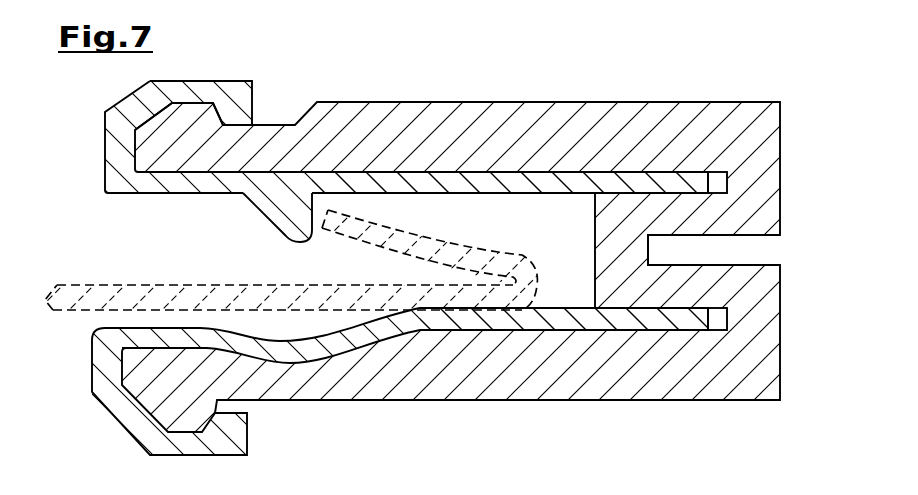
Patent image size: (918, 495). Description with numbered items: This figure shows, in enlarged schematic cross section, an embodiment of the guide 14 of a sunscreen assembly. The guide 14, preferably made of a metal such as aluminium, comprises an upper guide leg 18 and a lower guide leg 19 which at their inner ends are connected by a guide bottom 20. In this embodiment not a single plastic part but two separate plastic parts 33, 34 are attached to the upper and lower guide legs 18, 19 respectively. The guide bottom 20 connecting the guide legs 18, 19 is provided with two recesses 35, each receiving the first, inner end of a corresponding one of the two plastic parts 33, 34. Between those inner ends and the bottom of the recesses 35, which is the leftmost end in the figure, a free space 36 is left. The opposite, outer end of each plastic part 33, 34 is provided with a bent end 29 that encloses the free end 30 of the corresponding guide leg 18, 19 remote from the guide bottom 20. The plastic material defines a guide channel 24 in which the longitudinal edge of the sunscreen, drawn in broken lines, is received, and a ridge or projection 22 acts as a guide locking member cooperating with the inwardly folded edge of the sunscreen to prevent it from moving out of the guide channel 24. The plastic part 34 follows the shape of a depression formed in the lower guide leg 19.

The guide 14 is at (557, 97).
The upper guide leg 18 is at (427, 118).
The lower guide leg 19 is at (421, 399).
The guide bottom 20 is at (767, 283).
The projection 22 is at (297, 236).
The guide channel 24 is at (459, 247).
The bent end 29 is at (112, 150).
The free end 30 is at (197, 120).
The plastic part 33 is at (523, 200).
The plastic part 34 is at (580, 301).
The recess 35 is at (663, 168).
The free space 36 is at (727, 178).